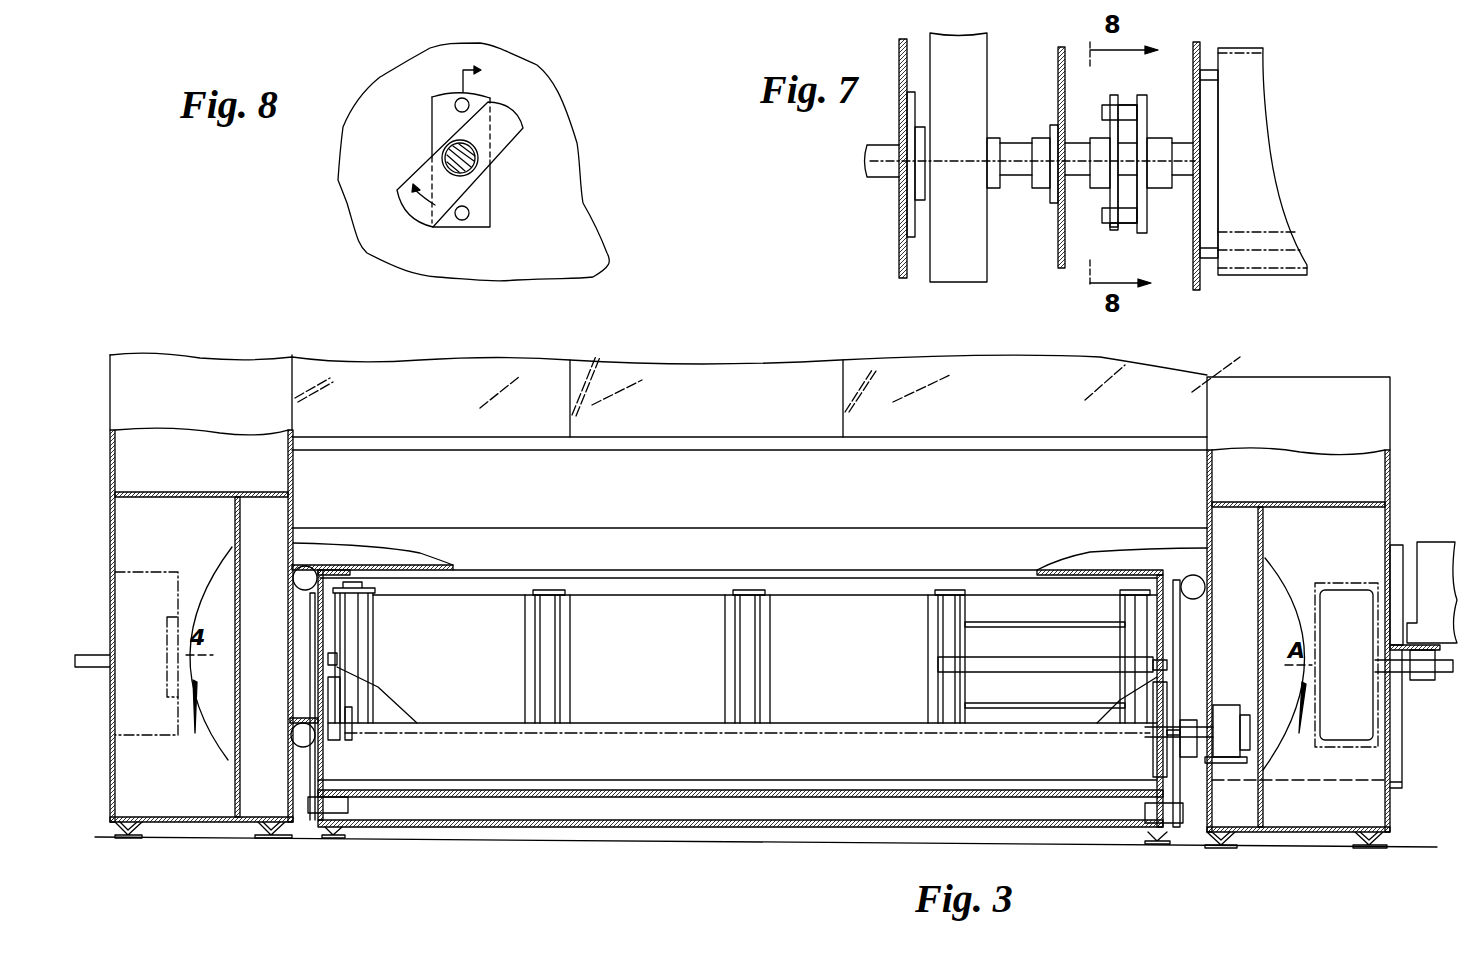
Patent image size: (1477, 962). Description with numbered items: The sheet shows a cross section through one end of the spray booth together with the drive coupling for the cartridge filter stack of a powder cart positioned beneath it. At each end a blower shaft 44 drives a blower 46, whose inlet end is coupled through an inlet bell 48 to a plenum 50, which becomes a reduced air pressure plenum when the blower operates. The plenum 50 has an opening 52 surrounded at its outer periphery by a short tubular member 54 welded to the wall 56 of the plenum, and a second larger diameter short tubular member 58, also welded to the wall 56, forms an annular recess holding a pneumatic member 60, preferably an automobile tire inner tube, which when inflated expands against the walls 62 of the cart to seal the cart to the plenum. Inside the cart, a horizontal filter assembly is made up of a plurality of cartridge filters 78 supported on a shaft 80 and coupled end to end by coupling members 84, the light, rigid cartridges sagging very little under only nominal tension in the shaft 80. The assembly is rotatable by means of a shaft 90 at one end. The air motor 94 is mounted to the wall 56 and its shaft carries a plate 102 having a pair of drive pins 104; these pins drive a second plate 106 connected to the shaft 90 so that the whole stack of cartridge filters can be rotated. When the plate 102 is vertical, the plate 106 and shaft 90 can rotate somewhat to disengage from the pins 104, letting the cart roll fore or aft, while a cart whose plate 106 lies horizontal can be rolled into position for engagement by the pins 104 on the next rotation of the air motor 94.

In FIG. 3, the blower shaft 44 is at (1447, 675).
In FIG. 3, the blower 46 is at (150, 572).
In FIG. 3, the inlet bell 48 is at (180, 617).
In FIG. 3, the plenum 50 is at (266, 497).
In FIG. 3, the opening 52 is at (1193, 637).
In FIG. 3, the short tubular member 54 is at (1200, 610).
In FIG. 3, the wall 56 is at (285, 790).
In FIG. 3, the second larger diameter short tubular member 58 is at (305, 750).
In FIG. 3, the pneumatic member 60 is at (312, 568).
In FIG. 3, the walls of the cart 62 is at (335, 565).
In FIG. 3, the cartridge filter 78 is at (1010, 620).
In FIG. 3, the shaft 80 is at (1060, 660).
In FIG. 3, the coupling member 84 is at (548, 590).
In FIG. 7, the shaft 90 is at (1015, 155).
In FIG. 3, the shaft 90 is at (1200, 740).
In FIG. 7, the air motor 94 is at (1283, 263).
In FIG. 3, the air motor 94 is at (1222, 705).
In FIG. 8, the plate 102 is at (440, 92).
In FIG. 7, the plate 102 is at (1142, 100).
In FIG. 8, the drive pin 104 is at (470, 98).
In FIG. 7, the drive pin 104 is at (1105, 110).
In FIG. 8, the second plate 106 is at (508, 120).
In FIG. 7, the second plate 106 is at (1115, 190).